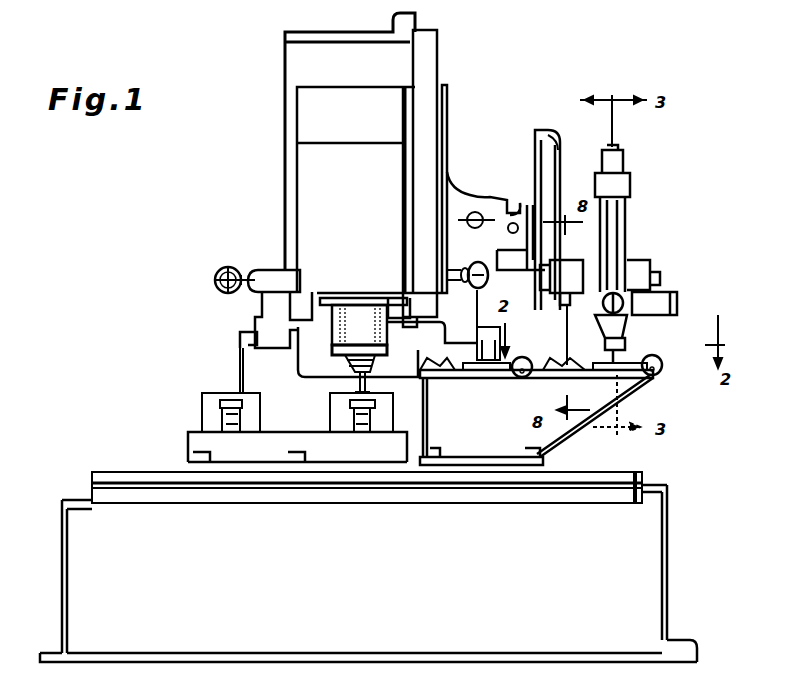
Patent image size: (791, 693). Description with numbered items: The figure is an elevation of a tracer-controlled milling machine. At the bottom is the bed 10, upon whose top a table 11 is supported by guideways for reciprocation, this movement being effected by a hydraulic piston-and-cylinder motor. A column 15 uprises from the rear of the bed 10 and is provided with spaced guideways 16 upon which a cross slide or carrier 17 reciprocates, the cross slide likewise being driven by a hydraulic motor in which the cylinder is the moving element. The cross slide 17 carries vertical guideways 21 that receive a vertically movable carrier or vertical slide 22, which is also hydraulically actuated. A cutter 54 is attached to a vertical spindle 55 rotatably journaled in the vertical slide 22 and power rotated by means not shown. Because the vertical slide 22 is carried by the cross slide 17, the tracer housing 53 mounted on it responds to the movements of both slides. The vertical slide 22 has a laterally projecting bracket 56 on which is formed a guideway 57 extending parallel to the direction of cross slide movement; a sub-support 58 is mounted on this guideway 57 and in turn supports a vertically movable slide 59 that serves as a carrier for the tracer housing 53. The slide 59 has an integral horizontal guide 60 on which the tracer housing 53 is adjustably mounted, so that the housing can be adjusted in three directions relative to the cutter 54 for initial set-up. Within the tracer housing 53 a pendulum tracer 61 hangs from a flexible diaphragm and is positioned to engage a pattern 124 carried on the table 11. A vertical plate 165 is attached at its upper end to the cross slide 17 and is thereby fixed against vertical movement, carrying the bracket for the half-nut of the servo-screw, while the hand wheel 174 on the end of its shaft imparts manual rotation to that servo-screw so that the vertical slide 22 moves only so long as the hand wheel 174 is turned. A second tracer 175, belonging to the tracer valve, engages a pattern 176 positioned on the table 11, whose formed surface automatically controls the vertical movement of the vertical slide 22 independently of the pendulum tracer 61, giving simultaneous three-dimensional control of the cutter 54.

The bed 10 is at (657, 538).
The table 11 is at (628, 490).
The column 15 is at (240, 372).
The guideways 16 is at (240, 347).
The cross slide 17 is at (262, 305).
The vertical guideways 21 is at (305, 292).
The vertical slide 22 is at (307, 174).
The tracer housing 53 is at (632, 262).
The cutter 54 is at (358, 384).
The vertical spindle 55 is at (378, 360).
The bracket 56 is at (460, 178).
The guideway 57 is at (502, 197).
The sub-support 58 is at (530, 155).
The vertically movable slide 59 is at (548, 165).
The horizontal guide 60 is at (572, 262).
The pendulum tracer 61 is at (625, 352).
The pattern 124 is at (620, 360).
The vertical plate 165 is at (432, 70).
The hand wheel 174 is at (476, 262).
The tracer 175 is at (563, 330).
The pattern 176 is at (522, 378).